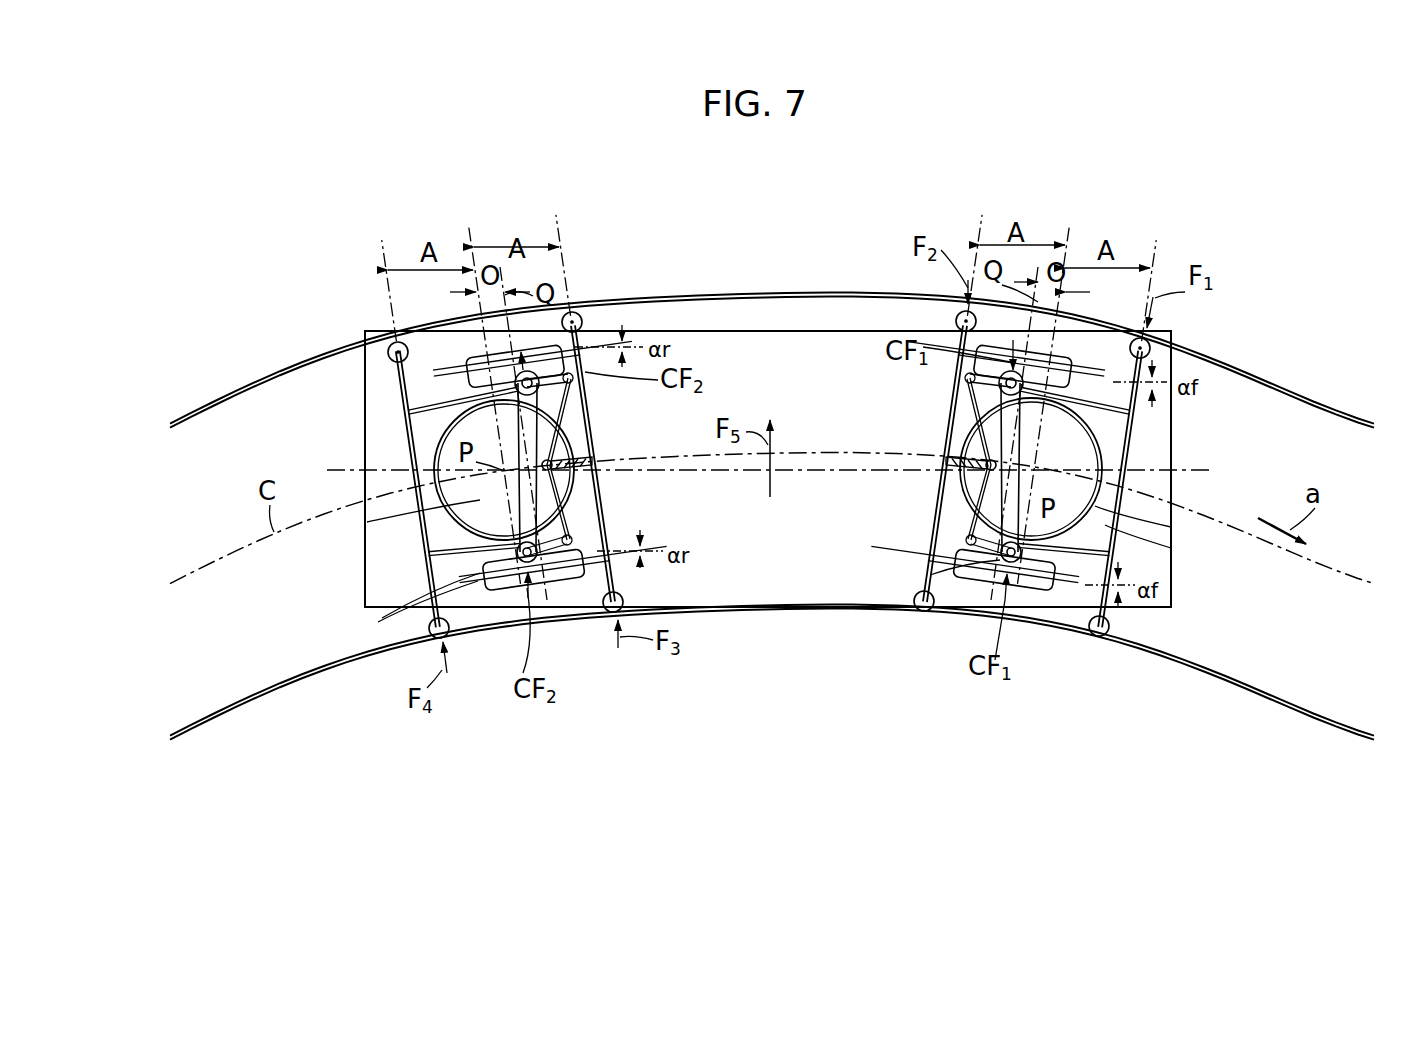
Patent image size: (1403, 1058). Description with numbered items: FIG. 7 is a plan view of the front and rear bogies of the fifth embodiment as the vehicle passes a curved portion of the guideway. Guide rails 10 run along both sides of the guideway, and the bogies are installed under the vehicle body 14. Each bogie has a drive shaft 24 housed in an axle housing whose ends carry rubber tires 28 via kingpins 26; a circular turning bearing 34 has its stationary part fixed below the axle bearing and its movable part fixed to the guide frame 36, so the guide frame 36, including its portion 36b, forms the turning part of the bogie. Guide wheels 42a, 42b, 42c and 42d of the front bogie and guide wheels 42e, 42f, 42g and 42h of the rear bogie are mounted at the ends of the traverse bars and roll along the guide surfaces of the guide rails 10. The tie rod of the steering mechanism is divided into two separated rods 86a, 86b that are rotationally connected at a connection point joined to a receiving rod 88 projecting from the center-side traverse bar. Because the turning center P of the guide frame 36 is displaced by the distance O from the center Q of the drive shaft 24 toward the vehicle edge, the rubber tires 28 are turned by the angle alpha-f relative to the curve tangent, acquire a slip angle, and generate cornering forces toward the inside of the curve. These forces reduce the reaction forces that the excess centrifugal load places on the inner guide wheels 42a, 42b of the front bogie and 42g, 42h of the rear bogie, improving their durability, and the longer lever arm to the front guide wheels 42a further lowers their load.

The guide rail 10 is at (292, 372).
The vehicle body 14 is at (1173, 453).
The drive shaft 24 is at (560, 502).
The kingpin 26 is at (447, 574).
The rubber tire 28 is at (940, 567).
The circular turning bearing 34 is at (367, 522).
The guide frame 36 is at (403, 425).
The bogie frame pivot 36b is at (963, 382).
The guide wheel 42a is at (1148, 340).
The guide wheel 42b is at (958, 314).
The guide wheel 42c is at (1092, 636).
The guide wheel 42d is at (915, 611).
The guide wheel 42e is at (579, 313).
The guide wheel 42f is at (389, 361).
The guide wheel 42g is at (607, 612).
The guide wheel 42h is at (446, 639).
The separated rod 86a is at (575, 532).
The separated rod 86b is at (556, 387).
The receiving rod 88 is at (590, 462).